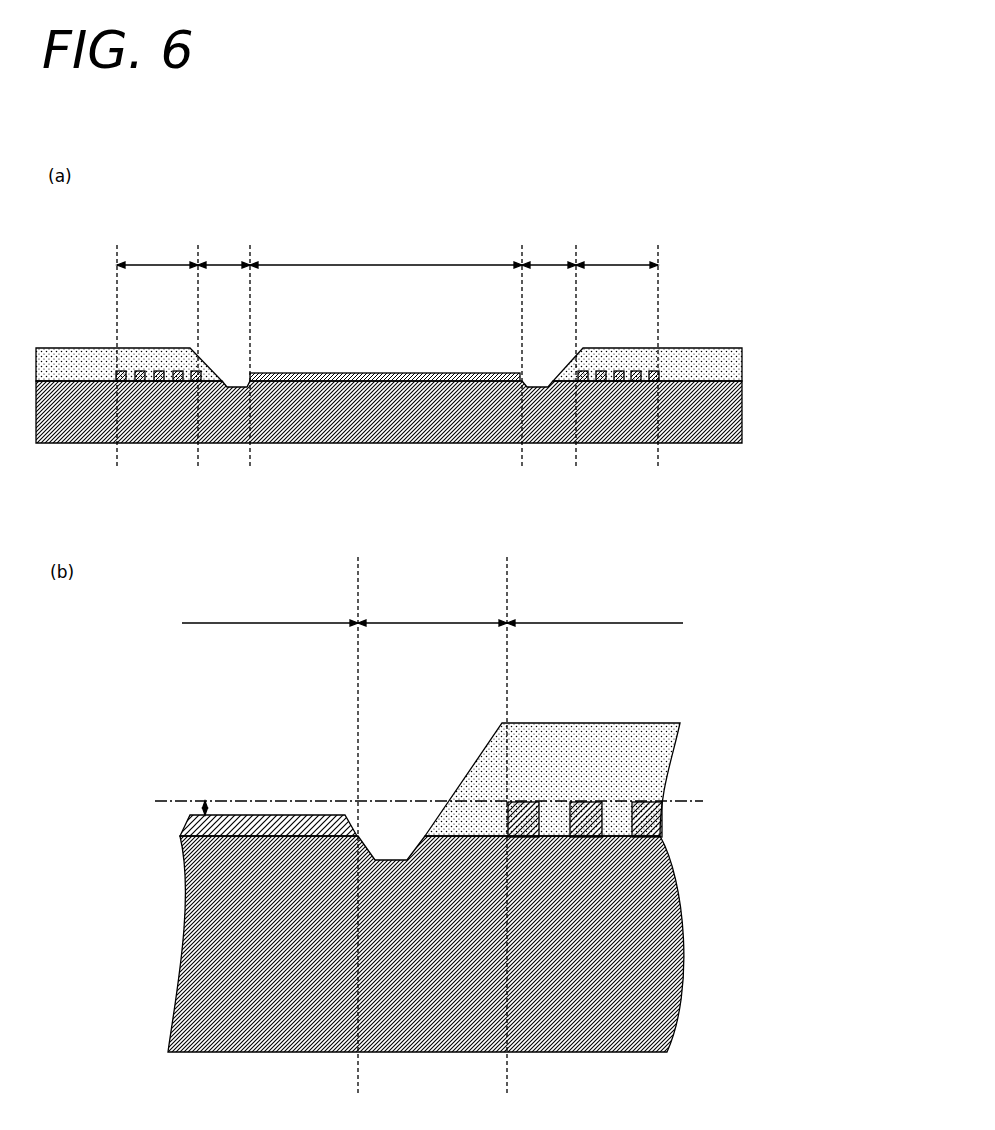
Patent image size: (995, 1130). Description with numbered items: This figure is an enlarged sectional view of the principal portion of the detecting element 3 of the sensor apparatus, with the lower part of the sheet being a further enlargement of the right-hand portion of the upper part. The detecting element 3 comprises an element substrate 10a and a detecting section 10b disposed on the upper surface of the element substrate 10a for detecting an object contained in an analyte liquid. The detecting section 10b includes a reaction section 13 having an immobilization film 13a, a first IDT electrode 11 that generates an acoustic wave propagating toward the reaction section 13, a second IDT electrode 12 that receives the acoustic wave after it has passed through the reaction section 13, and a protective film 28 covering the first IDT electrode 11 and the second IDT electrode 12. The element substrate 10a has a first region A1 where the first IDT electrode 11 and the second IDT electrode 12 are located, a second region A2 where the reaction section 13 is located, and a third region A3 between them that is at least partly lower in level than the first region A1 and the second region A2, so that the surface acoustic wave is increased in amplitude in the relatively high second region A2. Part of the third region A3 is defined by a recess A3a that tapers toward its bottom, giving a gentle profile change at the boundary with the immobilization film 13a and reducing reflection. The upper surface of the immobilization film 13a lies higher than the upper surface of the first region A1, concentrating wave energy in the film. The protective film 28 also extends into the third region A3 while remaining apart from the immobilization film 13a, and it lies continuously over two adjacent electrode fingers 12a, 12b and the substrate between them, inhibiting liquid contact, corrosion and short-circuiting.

The detecting element 3 is at (833, 356).
The element substrate 10a is at (717, 407).
The detecting section 10b is at (430, 557).
The first IDT electrode 11 is at (176, 370).
The second IDT electrode 12 is at (594, 370).
The electrode finger 12a is at (523, 800).
The electrode finger 12b is at (596, 800).
The reaction section 13 is at (350, 567).
The immobilization film 13a is at (346, 372).
The protective film 28 is at (675, 357).
The first region A1 is at (400, 431).
The second region A2 is at (352, 431).
The third region A3 is at (387, 431).
The recess A3a is at (394, 846).